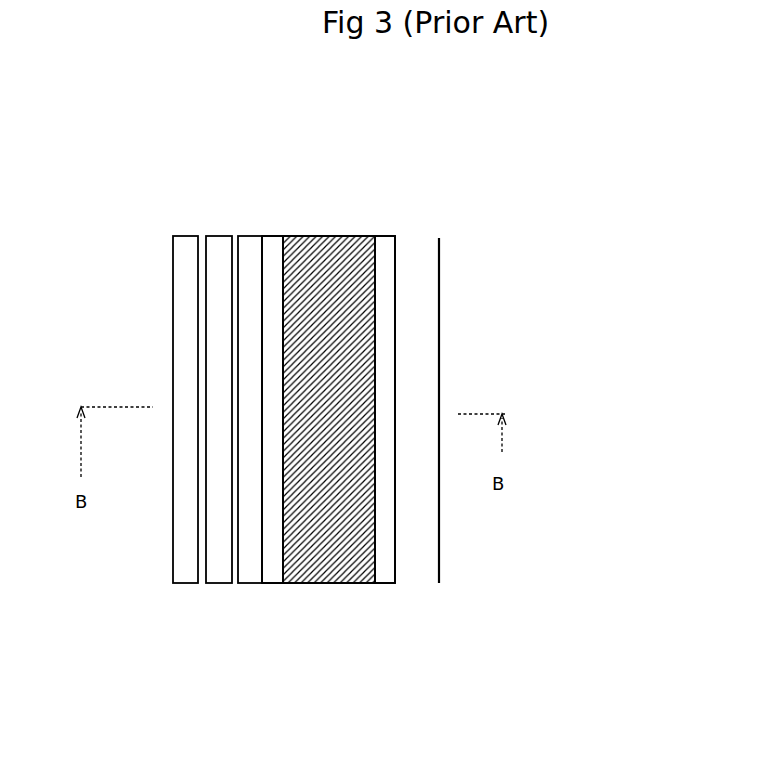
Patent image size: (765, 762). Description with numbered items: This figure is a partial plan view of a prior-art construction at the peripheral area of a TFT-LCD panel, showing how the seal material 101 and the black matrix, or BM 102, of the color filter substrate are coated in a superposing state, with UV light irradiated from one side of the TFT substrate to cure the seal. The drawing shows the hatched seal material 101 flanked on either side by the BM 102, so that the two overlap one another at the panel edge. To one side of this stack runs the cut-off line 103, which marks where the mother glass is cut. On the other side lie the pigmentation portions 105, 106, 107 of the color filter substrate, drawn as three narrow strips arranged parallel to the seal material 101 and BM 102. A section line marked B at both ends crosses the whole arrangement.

The seal material 101 is at (318, 236).
The BM 102 is at (275, 590).
The cut-off line 103 is at (440, 295).
The pigmentation portion 105 is at (170, 583).
The pigmentation portion 106 is at (216, 583).
The pigmentation portion 107 is at (242, 583).